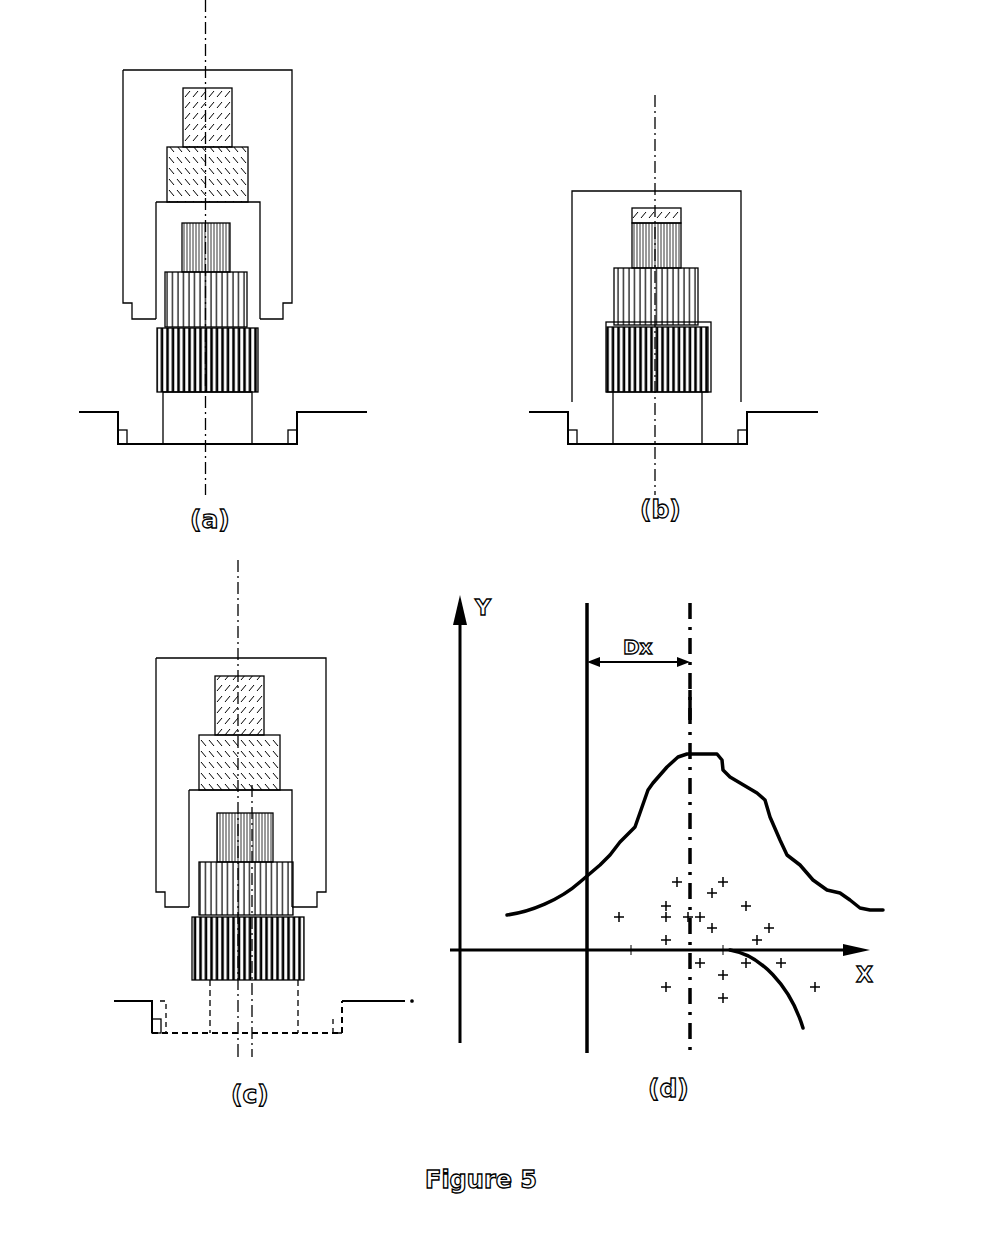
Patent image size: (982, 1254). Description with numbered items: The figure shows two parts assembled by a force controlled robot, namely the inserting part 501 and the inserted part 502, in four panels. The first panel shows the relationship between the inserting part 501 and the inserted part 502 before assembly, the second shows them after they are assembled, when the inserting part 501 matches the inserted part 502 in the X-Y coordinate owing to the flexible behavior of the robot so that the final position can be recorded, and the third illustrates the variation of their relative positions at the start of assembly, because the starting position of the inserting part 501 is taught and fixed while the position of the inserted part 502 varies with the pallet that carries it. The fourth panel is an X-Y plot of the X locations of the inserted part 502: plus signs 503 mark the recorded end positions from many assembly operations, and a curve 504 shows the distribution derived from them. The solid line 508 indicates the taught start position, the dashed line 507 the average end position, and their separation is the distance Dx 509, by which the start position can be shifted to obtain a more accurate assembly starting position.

The inserting part 501 is at (137, 165).
The inserted part 502 is at (170, 377).
The plus signs 503 is at (780, 1007).
The curve 504 is at (732, 778).
The dashed line 507 is at (692, 705).
The solid line 508 is at (587, 705).
The Dx 509 is at (633, 633).